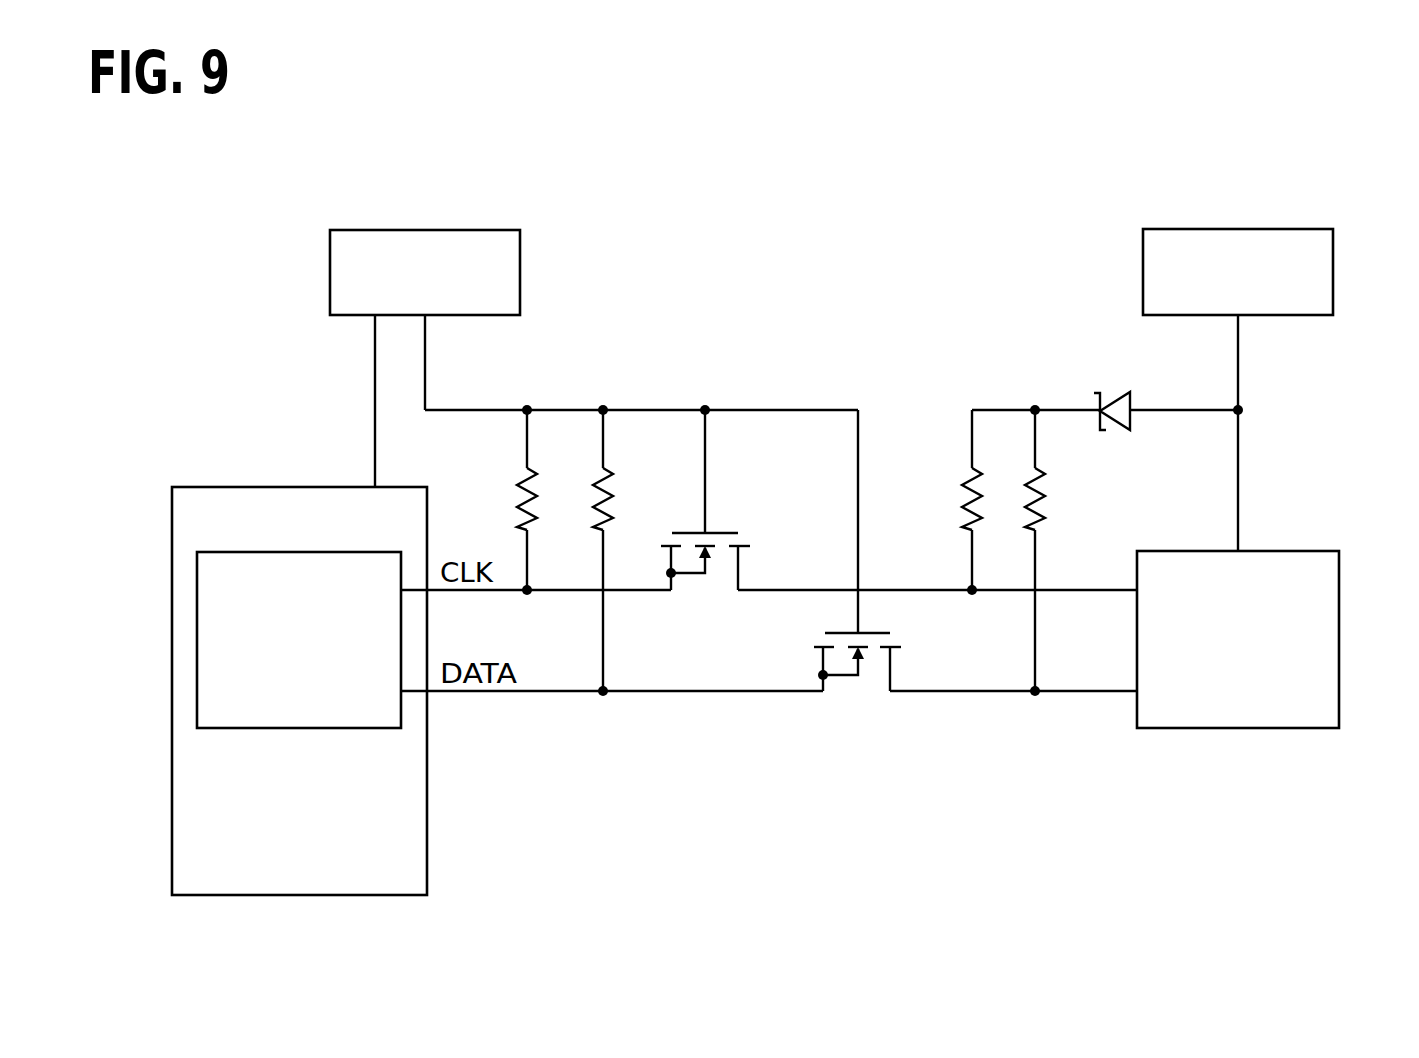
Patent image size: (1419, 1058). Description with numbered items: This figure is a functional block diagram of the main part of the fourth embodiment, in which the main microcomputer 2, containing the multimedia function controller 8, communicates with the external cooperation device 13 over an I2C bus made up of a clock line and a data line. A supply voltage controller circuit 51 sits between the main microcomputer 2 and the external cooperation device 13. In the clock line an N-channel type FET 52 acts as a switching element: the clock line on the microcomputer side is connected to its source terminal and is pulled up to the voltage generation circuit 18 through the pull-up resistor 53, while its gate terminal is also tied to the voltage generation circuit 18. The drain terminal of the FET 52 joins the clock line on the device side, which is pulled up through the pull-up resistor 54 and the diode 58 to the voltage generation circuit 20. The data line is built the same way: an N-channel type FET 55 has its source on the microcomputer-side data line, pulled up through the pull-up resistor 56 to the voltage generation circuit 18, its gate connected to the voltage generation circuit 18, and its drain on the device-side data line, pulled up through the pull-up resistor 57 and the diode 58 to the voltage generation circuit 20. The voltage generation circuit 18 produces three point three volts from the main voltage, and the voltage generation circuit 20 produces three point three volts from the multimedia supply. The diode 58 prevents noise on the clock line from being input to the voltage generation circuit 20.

The main microcomputer 2 is at (250, 486).
The multimedia function controller 8 is at (290, 730).
The external cooperation device 13 is at (1290, 548).
The voltage generation circuit 18 is at (520, 272).
The voltage generation circuit 20 is at (1333, 270).
The supply voltage controller circuit 51 is at (881, 390).
The N-channel type FET 52 is at (716, 586).
The pull-up resistor 53 is at (508, 494).
The pull-up resistor 54 is at (953, 494).
The N-channel type FET 55 is at (861, 688).
The pull-up resistor 56 is at (582, 494).
The pull-up resistor 57 is at (1017, 494).
The diode 58 is at (1110, 390).